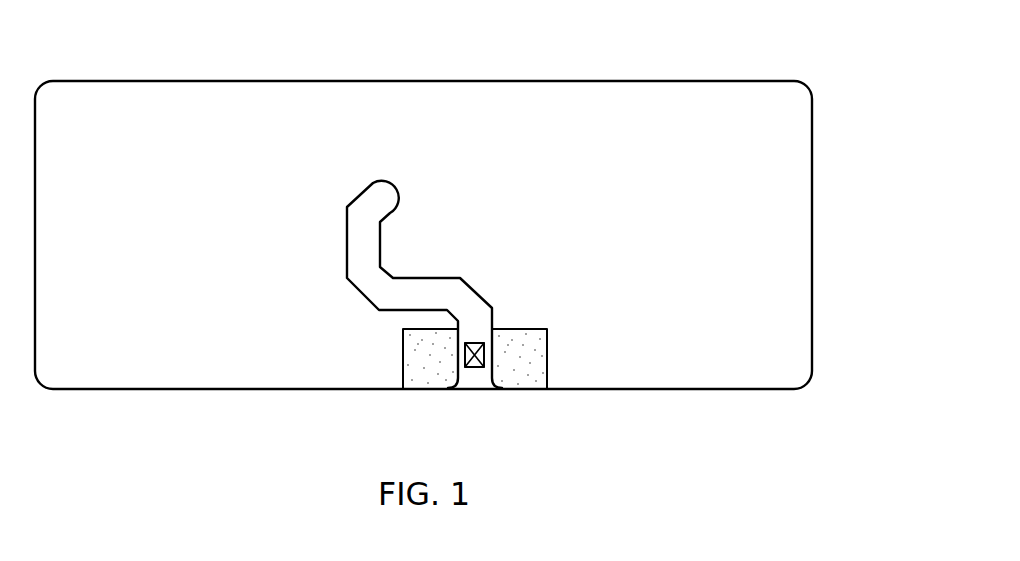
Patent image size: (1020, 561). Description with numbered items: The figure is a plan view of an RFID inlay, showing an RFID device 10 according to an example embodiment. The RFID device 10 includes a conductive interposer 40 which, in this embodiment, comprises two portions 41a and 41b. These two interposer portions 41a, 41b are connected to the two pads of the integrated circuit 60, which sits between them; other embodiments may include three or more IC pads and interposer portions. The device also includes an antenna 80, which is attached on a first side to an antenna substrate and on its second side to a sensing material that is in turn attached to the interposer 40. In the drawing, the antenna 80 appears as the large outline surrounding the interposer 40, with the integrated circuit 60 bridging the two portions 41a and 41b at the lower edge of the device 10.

The RFID device 10 is at (423, 260).
The antenna 80 is at (650, 90).
The conductive interposer 40 is at (493, 308).
The interposer portion 41a is at (522, 380).
The interposer portion 41b is at (428, 380).
The integrated circuit 60 is at (477, 368).